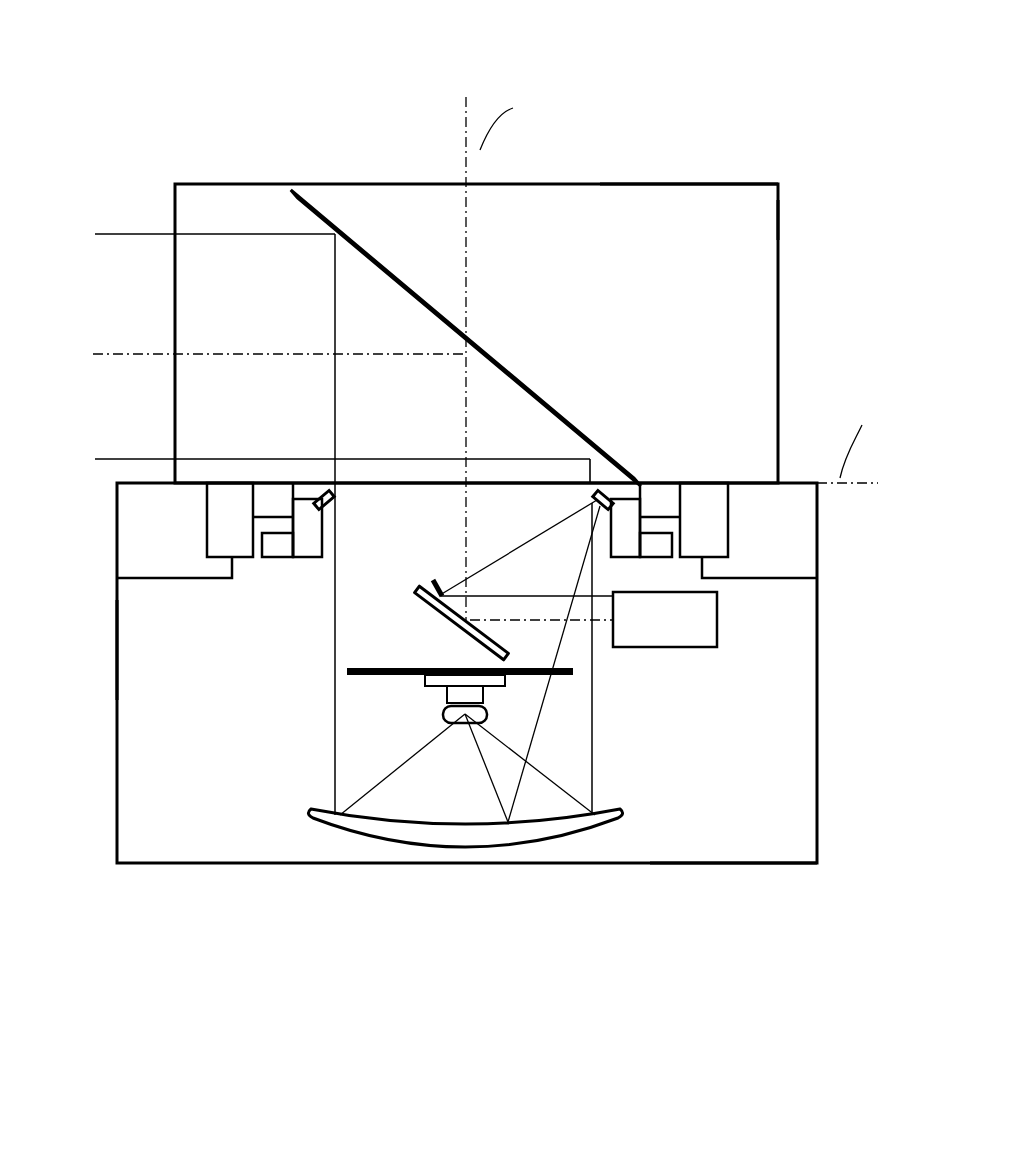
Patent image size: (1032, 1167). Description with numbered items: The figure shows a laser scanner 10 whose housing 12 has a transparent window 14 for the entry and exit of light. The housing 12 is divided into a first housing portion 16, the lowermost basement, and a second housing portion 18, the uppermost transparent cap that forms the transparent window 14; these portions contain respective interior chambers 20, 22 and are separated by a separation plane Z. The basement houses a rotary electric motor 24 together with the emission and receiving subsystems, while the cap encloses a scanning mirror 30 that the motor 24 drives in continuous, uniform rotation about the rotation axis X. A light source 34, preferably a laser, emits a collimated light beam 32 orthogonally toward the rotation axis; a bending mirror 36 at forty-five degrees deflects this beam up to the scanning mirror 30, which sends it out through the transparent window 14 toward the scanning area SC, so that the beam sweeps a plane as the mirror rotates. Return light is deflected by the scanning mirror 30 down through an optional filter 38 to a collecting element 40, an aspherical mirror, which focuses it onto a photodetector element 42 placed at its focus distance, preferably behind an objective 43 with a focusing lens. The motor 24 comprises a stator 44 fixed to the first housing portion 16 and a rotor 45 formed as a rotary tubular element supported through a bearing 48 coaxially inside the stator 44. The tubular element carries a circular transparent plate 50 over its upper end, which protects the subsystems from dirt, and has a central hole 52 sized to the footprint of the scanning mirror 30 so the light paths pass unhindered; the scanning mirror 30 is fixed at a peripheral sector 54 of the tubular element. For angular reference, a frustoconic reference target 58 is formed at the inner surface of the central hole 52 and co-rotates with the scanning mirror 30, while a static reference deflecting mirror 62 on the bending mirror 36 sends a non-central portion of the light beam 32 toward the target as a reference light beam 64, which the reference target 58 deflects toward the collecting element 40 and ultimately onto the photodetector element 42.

The laser scanner 10 is at (248, 110).
The housing 12 is at (800, 405).
The transparent window 14 is at (780, 272).
The first housing portion 16 is at (818, 640).
The second housing portion 18 is at (680, 183).
The interior chamber 20 is at (794, 847).
The interior chamber 22 is at (761, 230).
The rotary electric motor 24 is at (243, 608).
The scanning mirror 30 is at (497, 350).
The light beam 32 is at (222, 352).
The light source 34 is at (693, 638).
The bending mirror 36 is at (440, 617).
The filter 38 is at (575, 675).
The collecting element 40 is at (318, 818).
The photodetector element 42 is at (460, 693).
The objective 43 is at (465, 722).
The stator 44 is at (227, 522).
The rotor 45 is at (313, 533).
The bearing 48 is at (265, 497).
The circular transparent plate 50 is at (402, 492).
The central hole 52 is at (600, 548).
The peripheral sector 54 is at (648, 478).
The reference target 58 is at (600, 490).
The static reference deflecting mirror 62 is at (430, 578).
The reference light beam 64 is at (490, 565).